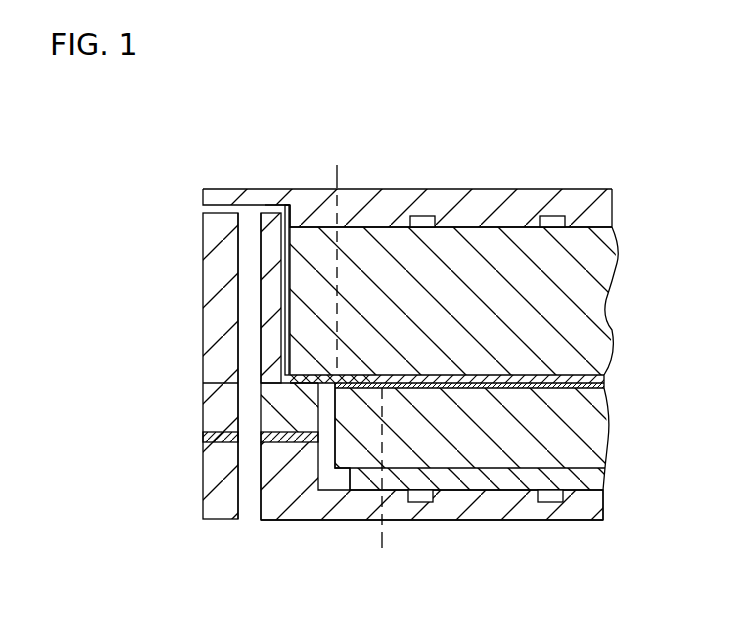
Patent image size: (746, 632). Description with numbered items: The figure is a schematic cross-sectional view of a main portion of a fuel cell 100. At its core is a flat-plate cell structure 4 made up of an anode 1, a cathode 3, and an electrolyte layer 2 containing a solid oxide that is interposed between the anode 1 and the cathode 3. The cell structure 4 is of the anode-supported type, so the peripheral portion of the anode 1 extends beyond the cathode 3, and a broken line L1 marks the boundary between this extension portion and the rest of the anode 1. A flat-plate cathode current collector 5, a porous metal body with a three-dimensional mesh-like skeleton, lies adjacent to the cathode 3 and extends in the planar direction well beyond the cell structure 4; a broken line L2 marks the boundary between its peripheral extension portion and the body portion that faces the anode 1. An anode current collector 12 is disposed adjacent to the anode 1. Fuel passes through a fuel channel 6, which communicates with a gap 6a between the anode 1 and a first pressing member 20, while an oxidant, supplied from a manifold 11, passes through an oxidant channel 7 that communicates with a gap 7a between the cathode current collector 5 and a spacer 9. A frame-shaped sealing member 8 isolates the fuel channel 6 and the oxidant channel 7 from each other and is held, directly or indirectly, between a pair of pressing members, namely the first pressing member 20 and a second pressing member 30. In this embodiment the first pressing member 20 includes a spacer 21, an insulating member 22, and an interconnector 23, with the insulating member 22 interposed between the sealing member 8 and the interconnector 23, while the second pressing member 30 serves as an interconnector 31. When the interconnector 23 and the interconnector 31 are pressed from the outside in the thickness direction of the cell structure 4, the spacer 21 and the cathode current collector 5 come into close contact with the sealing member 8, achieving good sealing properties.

The fuel cell 100 is at (448, 162).
The anode 1 is at (501, 425).
The electrolyte layer 2 is at (596, 386).
The cathode 3 is at (600, 377).
The cell structure 4 is at (494, 406).
The cathode current collector 5 is at (596, 298).
The fuel channel 6 is at (550, 503).
The gap 6a is at (332, 484).
The oxidant channel 7 is at (553, 219).
The gap 7a is at (287, 202).
The sealing member 8 is at (310, 373).
The spacer 9 is at (272, 248).
The manifold 11 is at (248, 523).
The anode current collector 12 is at (603, 480).
The first pressing member 20 is at (210, 366).
The spacer 21 is at (290, 405).
The insulating member 22 is at (290, 447).
The interconnector 23 is at (285, 487).
The second pressing member 30 is at (442, 179).
The interconnector 31 is at (310, 197).
The broken line L1 is at (384, 542).
The broken line L2 is at (338, 168).